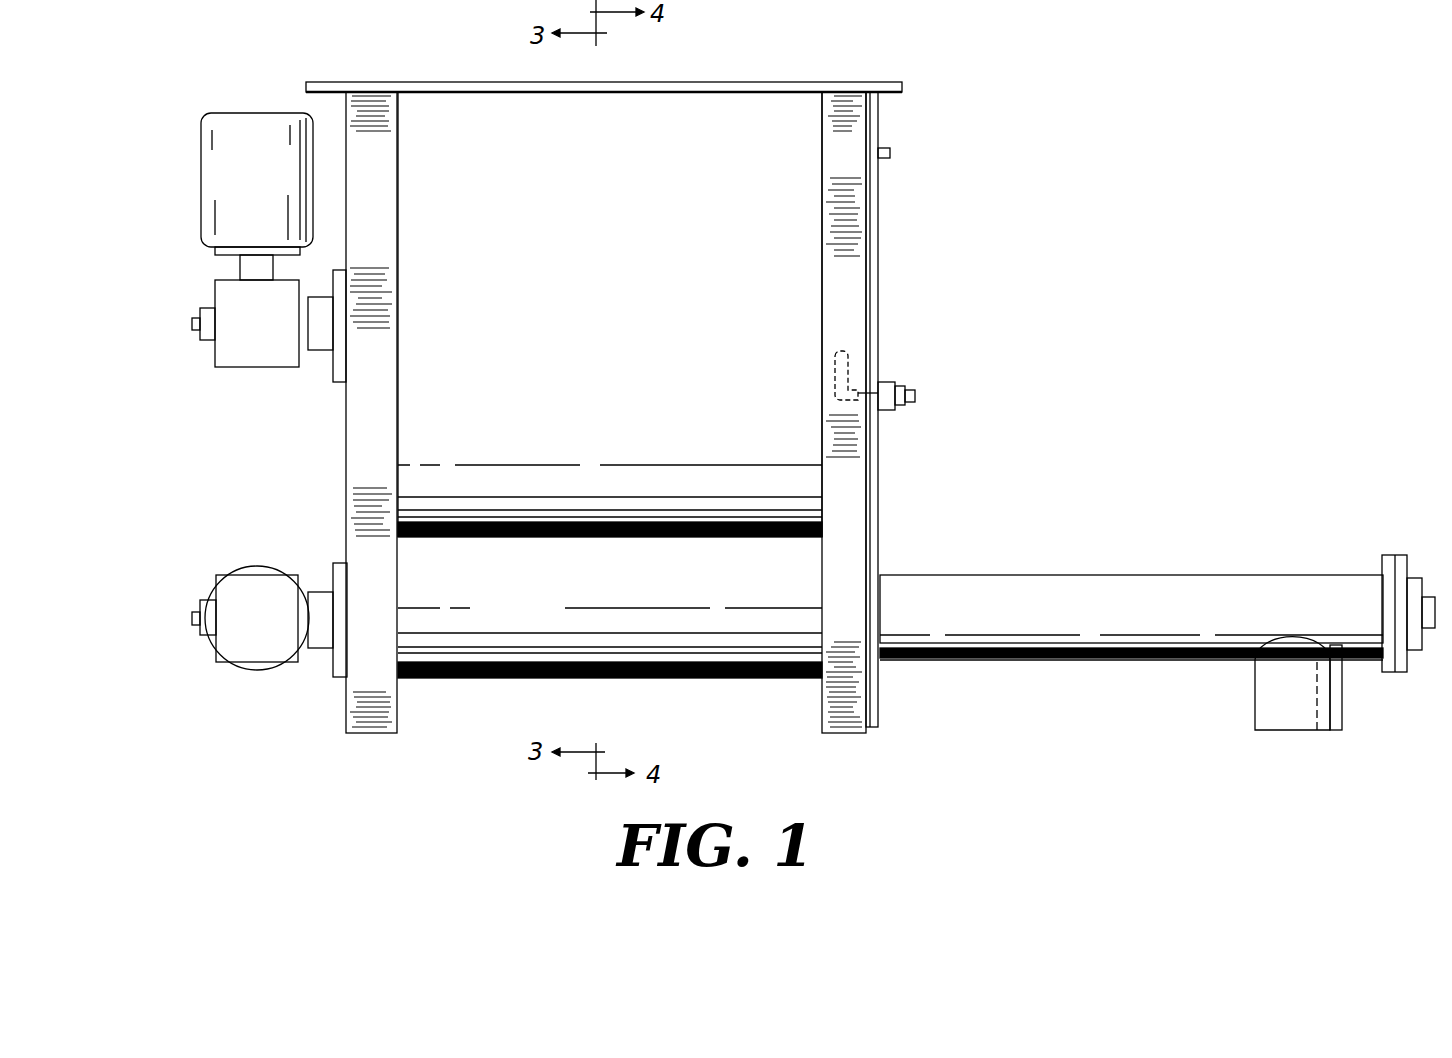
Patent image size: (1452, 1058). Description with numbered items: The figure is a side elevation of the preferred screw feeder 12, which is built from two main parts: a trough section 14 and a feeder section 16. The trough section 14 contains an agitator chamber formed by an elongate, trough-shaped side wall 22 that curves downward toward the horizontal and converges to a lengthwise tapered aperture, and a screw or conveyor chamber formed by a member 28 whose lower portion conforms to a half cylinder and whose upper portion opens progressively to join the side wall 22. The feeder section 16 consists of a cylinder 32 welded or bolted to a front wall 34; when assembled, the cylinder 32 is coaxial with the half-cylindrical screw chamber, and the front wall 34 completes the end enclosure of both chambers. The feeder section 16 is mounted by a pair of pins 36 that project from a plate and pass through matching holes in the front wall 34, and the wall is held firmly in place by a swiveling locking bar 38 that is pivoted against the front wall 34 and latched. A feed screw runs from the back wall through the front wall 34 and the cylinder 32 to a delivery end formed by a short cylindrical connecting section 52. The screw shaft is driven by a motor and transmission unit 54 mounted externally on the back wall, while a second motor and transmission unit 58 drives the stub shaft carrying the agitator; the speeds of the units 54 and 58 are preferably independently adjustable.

The screw feeder 12 is at (1060, 145).
The trough section 14 is at (745, 58).
The feeder section 16 is at (1140, 510).
The side wall 22 is at (600, 387).
The member 28 is at (615, 602).
The cylinder 32 is at (1240, 572).
The front wall 34 is at (878, 313).
The pins 36 is at (890, 153).
The locking bar 38 is at (895, 375).
The connecting section 52 is at (1258, 698).
The motor and transmission unit 54 is at (160, 594).
The motor and transmission unit 58 is at (200, 262).